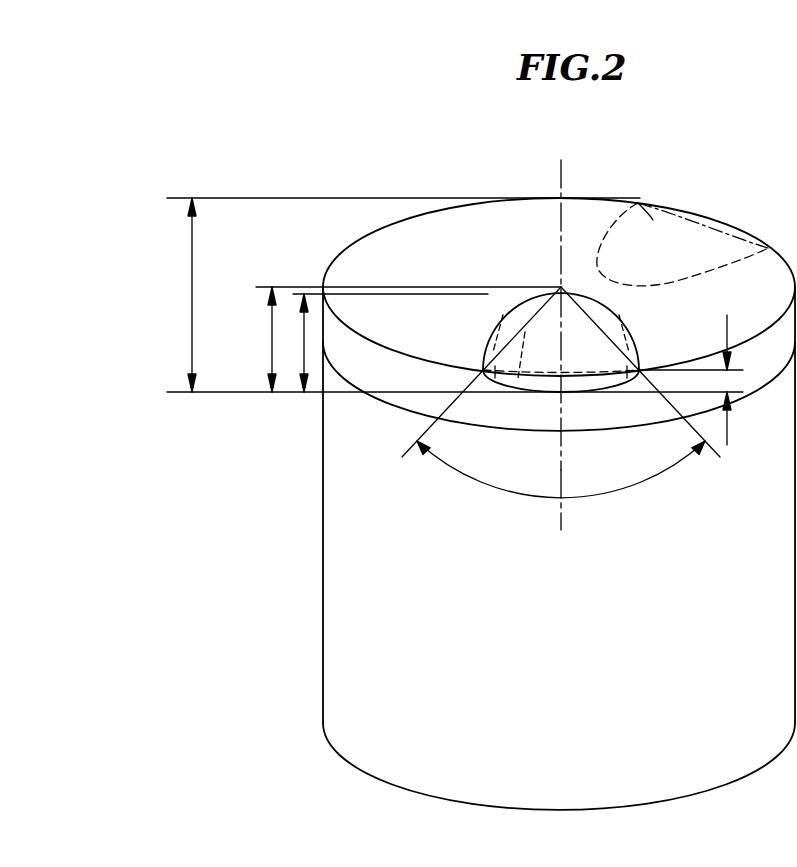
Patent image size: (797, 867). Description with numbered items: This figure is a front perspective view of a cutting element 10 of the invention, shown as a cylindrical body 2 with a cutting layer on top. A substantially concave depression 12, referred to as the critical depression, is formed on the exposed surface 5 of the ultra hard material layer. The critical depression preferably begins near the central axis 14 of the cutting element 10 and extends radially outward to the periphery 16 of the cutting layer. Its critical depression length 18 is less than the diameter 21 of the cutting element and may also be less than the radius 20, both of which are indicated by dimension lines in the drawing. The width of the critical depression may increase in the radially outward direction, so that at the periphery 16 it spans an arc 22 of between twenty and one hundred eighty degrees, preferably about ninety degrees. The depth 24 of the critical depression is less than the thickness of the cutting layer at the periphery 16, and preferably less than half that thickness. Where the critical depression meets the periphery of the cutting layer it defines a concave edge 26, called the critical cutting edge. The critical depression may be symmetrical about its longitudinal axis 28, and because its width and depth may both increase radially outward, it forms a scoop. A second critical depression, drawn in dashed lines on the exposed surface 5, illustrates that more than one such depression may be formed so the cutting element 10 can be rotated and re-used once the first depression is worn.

The cylindrical body 2 is at (382, 664).
The exposed surface 5 is at (582, 227).
The cutting element 10 is at (510, 504).
The concave depression 12 is at (528, 345).
The central axis 14 is at (561, 177).
The periphery 16 is at (420, 390).
The critical depression length 18 is at (304, 334).
The radius 20 is at (272, 355).
The diameter 21 is at (192, 290).
The arc 22 is at (530, 497).
The depth 24 is at (727, 435).
The concave edge 26 is at (537, 392).
The longitudinal axis 28 is at (561, 518).